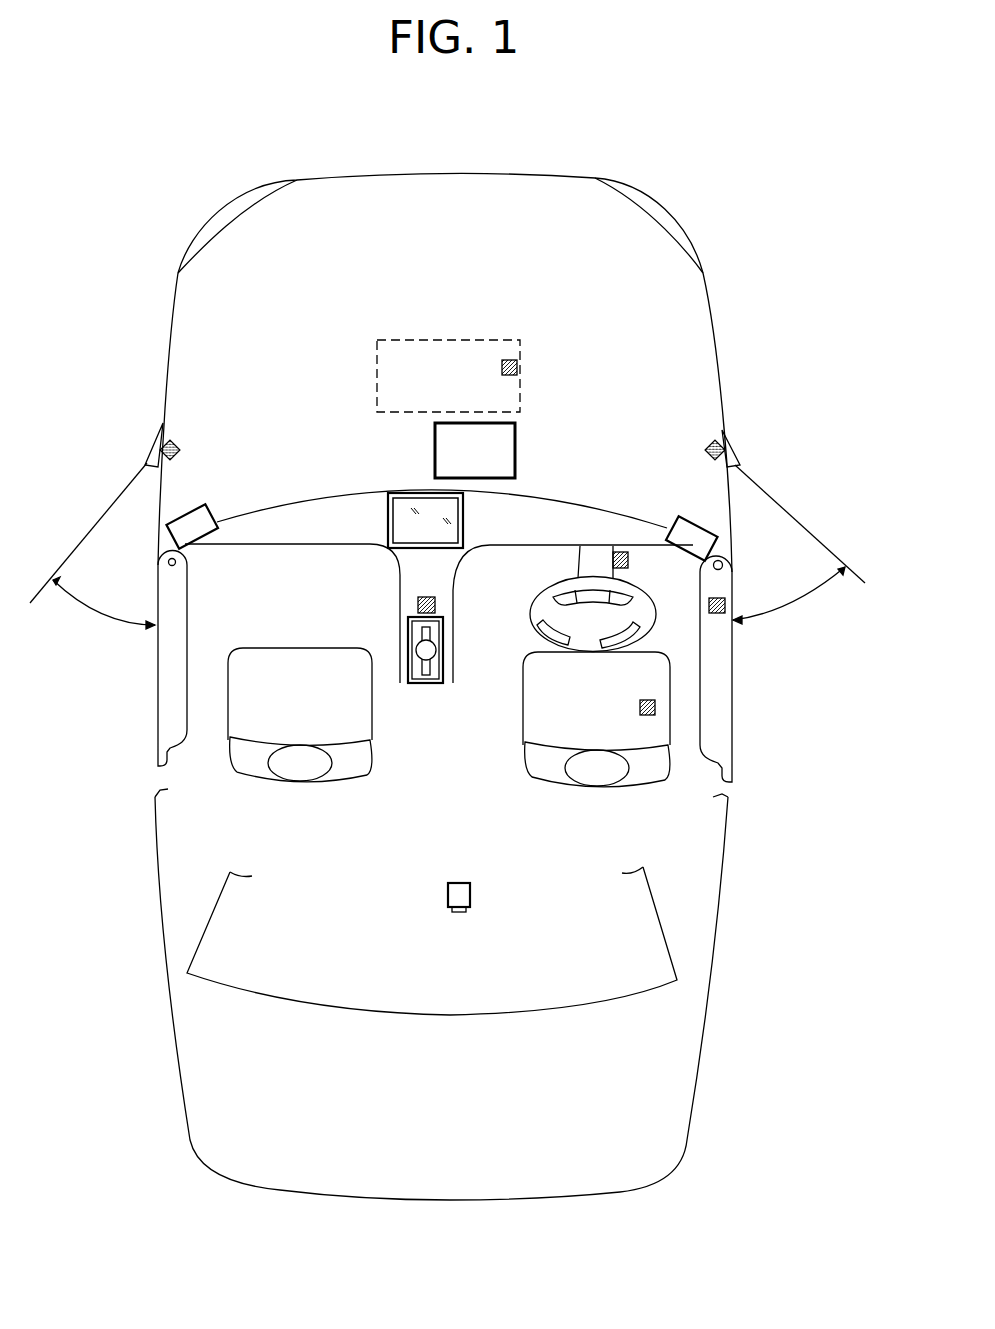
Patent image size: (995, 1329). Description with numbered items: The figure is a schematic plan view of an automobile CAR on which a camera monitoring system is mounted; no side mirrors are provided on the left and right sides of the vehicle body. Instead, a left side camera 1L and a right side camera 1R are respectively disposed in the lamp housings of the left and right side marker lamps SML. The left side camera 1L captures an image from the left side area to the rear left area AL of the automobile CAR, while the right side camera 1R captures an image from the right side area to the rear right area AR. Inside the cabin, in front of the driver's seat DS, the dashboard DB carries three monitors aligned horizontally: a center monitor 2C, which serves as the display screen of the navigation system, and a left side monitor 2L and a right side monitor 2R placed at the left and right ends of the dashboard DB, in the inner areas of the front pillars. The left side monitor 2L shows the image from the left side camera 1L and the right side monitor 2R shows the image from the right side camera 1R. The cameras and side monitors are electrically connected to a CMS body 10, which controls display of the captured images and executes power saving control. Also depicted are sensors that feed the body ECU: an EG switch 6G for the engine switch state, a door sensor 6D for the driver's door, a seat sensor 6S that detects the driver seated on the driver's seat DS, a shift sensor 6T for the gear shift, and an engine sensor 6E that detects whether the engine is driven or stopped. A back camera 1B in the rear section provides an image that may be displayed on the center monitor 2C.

The automobile CAR is at (590, 178).
The side marker lamp SML is at (150, 450).
The left side camera 1L is at (176, 443).
The right side camera 1R is at (706, 452).
The left side monitor 2L is at (190, 504).
The right side monitor 2R is at (676, 514).
The center monitor 2C is at (407, 505).
The CMS body 10 is at (515, 441).
The engine sensor 6E is at (517, 368).
The EG switch 6G is at (620, 552).
The shift sensor 6T is at (436, 605).
The seat sensor 6S is at (640, 707).
The door sensor 6D is at (718, 613).
The dashboard DB is at (350, 545).
The driver's seat DS is at (530, 775).
The rear left area AL is at (88, 626).
The rear right area AR is at (812, 624).
The back camera 1B is at (470, 897).